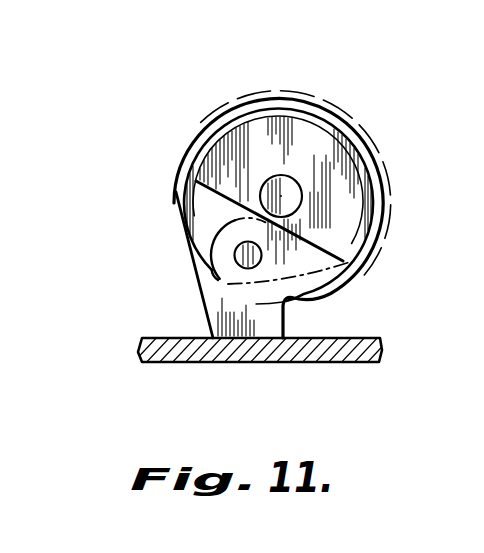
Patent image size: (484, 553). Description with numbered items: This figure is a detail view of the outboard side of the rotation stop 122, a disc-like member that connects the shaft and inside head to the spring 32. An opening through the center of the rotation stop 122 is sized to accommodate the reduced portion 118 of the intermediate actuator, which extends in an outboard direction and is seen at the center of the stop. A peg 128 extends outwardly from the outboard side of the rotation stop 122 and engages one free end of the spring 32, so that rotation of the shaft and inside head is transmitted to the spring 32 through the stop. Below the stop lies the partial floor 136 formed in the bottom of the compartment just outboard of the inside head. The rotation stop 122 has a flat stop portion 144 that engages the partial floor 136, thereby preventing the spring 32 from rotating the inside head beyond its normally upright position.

The rotation stop 122 is at (191, 114).
The reduced portion 118 is at (302, 192).
The peg 128 is at (236, 250).
The spring 32 is at (230, 289).
The flat stop portion 144 is at (235, 328).
The partial floor 136 is at (355, 337).